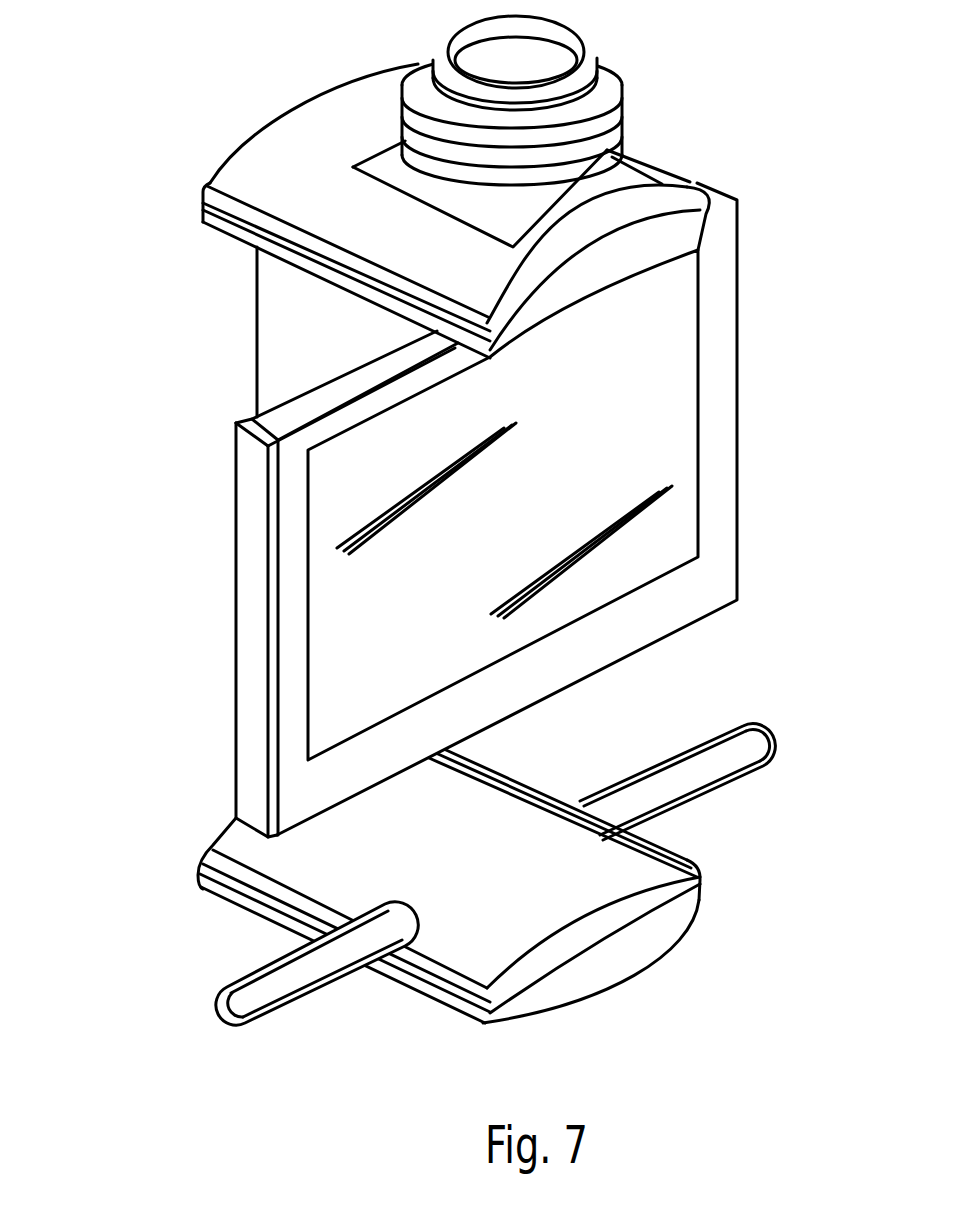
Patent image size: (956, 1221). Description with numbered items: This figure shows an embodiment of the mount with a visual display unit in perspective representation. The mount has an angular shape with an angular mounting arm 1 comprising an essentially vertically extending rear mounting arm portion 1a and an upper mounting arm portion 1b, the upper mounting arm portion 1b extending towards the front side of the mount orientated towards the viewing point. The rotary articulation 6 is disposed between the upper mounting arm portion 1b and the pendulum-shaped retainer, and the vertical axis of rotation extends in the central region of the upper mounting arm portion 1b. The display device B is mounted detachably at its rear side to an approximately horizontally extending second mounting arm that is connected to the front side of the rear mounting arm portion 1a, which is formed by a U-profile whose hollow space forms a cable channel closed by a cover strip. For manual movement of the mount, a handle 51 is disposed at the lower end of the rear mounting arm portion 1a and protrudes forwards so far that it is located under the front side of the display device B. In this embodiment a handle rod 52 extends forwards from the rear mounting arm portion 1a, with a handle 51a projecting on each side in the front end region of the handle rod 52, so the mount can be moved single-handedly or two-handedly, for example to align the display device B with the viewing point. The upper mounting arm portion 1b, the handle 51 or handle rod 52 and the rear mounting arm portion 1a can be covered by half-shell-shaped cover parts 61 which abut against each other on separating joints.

The angular mounting arm 1 is at (250, 326).
The rear mounting arm portion 1a is at (277, 358).
The upper mounting arm portion 1b is at (252, 925).
The rotary articulation 6 is at (640, 60).
The half-shell-shaped cover part 61 is at (208, 185).
The display device B is at (237, 612).
The handle 51 is at (622, 968).
The handle 51a is at (747, 766).
The handle rod 52 is at (473, 858).